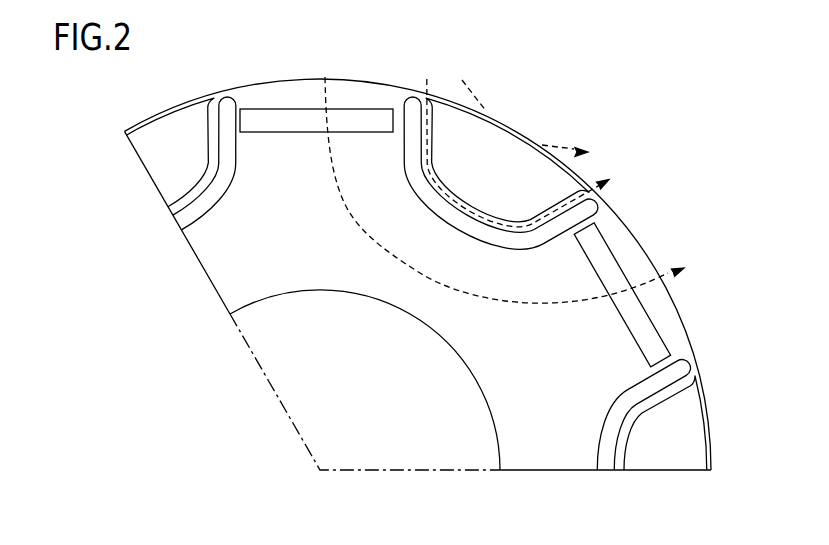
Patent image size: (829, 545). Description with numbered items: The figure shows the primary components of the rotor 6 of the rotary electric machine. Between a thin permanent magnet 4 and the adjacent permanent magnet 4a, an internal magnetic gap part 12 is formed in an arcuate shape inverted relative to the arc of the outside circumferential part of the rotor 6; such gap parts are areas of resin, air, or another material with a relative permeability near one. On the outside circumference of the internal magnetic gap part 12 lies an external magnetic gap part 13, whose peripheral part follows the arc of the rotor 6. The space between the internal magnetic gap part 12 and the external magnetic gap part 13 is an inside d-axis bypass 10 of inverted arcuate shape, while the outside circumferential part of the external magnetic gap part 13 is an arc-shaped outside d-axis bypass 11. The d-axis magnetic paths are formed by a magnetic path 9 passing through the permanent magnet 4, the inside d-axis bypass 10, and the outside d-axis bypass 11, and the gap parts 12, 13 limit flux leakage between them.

The permanent magnet 4 is at (265, 117).
The permanent magnet 4a is at (613, 258).
The rotor 6 is at (288, 167).
The magnetic path 9 is at (342, 203).
The inside d-axis bypass 10 is at (450, 116).
The outside d-axis bypass 11 is at (510, 173).
The internal magnetic gap part 12 is at (445, 215).
The external magnetic gap part 13 is at (537, 128).